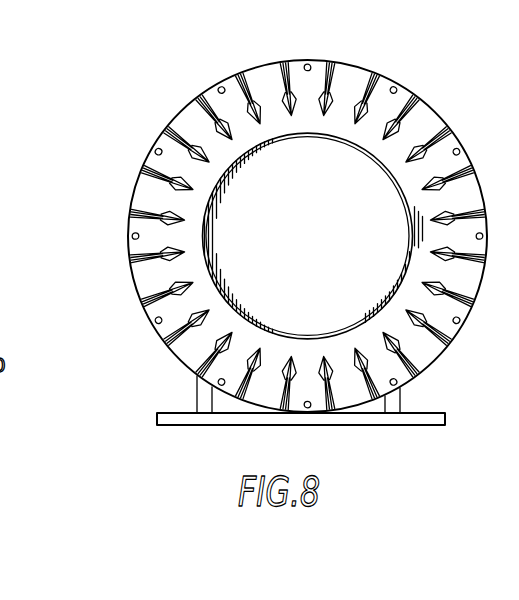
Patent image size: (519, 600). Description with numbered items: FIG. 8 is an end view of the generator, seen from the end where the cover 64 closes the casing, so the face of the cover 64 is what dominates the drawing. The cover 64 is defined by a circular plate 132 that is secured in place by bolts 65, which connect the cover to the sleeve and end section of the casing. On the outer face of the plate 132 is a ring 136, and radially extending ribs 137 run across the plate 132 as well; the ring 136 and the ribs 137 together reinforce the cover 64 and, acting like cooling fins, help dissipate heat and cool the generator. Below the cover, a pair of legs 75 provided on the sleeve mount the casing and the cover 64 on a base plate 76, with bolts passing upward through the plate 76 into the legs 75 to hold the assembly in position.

The cover 64 is at (402, 88).
The bolts 65 is at (461, 150).
The legs 75 is at (209, 402).
The base plate 76 is at (447, 420).
The circular plate 132 is at (326, 284).
The ring 136 is at (310, 134).
The radially extending ribs 137 is at (278, 64).